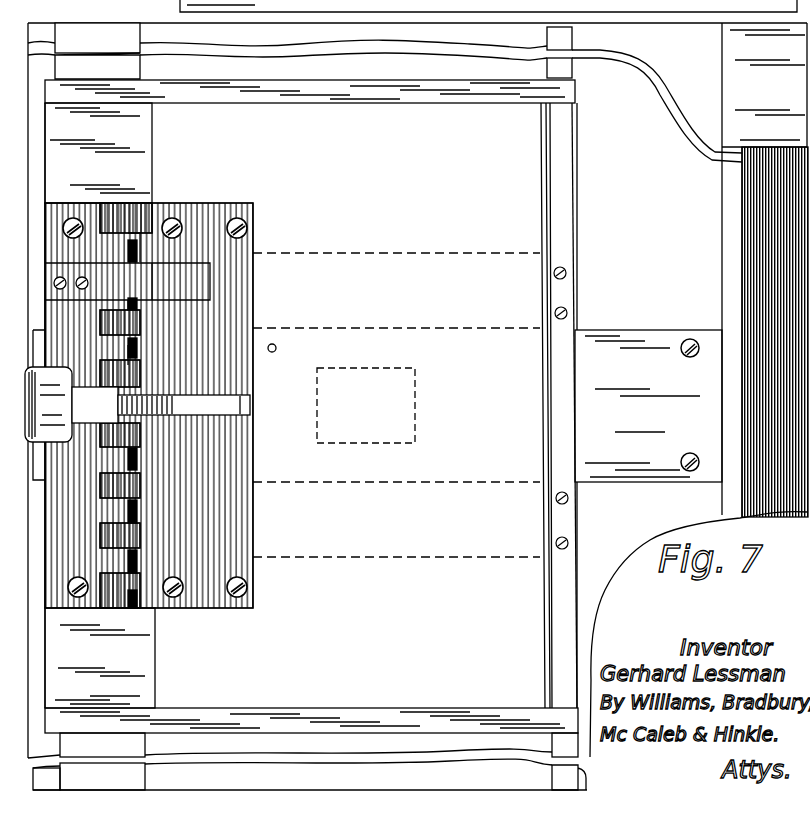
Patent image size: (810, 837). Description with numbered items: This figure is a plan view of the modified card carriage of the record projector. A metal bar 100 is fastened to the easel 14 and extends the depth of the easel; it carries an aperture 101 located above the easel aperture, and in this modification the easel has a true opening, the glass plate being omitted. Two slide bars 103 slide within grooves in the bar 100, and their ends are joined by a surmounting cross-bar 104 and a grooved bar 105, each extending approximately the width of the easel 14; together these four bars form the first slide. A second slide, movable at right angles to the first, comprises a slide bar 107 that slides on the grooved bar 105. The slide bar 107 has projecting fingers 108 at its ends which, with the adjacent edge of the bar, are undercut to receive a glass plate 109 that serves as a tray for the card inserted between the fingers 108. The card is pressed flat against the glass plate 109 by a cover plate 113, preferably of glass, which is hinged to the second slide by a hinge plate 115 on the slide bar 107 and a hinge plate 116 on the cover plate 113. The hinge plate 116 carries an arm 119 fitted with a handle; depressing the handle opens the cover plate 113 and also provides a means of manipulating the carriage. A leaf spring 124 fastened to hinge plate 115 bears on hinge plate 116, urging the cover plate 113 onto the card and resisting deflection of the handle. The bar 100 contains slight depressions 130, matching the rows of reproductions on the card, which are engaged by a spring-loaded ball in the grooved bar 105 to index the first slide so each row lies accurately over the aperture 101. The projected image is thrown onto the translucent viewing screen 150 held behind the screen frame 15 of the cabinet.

The easel 14 is at (640, 161).
The viewing screen frame 15 is at (772, 106).
The metal bar 100 is at (648, 406).
The aperture 101 is at (375, 370).
The slide bars 103 is at (397, 256).
The cross-bar 104 is at (560, 222).
The grooved bar 105 is at (142, 66).
The slide bar 107 is at (128, 138).
The projecting fingers 108 is at (327, 98).
The glass plate 109 is at (547, 242).
The cover plate 113 is at (549, 284).
The hinge plate 115 is at (52, 600).
The hinge plate 116 is at (253, 534).
The arm 119 is at (137, 405).
The leaf spring 124 is at (212, 266).
The depressions 130 is at (277, 349).
The viewing screen 150 is at (742, 223).